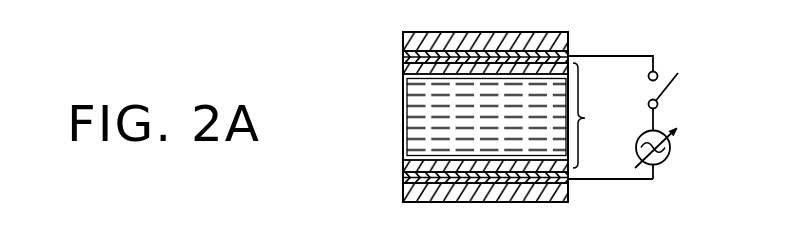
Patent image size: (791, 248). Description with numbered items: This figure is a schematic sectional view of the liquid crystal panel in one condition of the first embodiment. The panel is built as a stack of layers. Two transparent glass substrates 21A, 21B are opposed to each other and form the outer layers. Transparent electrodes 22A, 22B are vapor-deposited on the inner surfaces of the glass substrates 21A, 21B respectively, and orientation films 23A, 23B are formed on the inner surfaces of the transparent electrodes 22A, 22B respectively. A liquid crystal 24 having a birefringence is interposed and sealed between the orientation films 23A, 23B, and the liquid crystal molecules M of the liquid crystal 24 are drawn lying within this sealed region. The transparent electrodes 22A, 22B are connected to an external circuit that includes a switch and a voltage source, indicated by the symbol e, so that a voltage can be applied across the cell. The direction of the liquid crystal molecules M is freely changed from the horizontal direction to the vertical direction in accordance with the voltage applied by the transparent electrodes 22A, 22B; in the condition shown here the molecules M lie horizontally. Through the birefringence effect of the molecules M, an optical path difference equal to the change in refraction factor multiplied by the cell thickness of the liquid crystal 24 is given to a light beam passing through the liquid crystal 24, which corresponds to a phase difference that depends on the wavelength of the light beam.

The transparent glass substrate 21A is at (403, 36).
The transparent electrode 22A is at (403, 57).
The orientation film 23A is at (403, 68).
The liquid crystal molecules M is at (403, 107).
The orientation film 23B is at (403, 165).
The transparent electrode 22B is at (403, 177).
The transparent glass substrate 21B is at (403, 196).
The liquid crystal 24 is at (598, 115).
The AC voltage source e is at (668, 148).